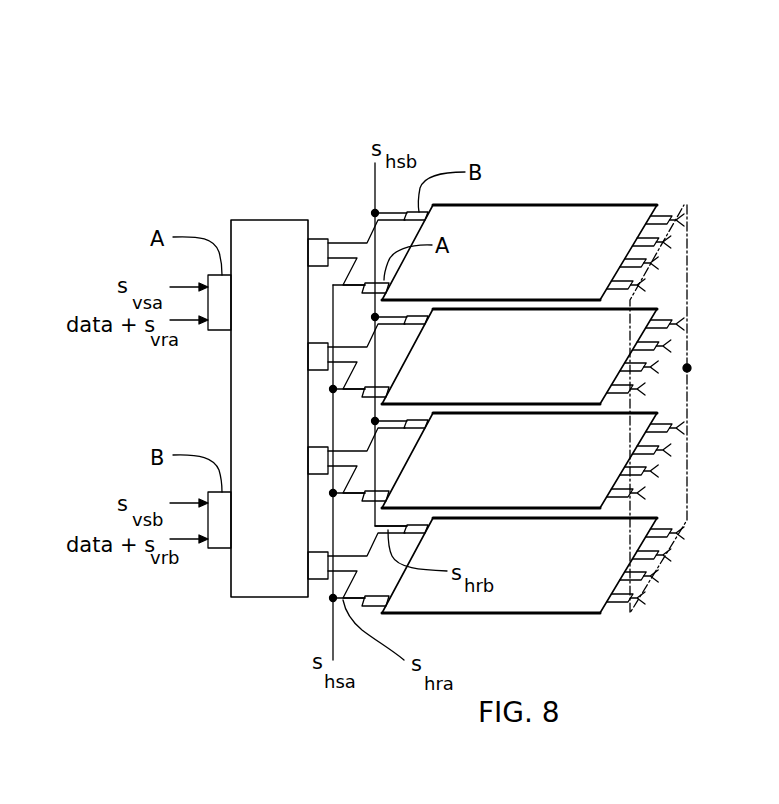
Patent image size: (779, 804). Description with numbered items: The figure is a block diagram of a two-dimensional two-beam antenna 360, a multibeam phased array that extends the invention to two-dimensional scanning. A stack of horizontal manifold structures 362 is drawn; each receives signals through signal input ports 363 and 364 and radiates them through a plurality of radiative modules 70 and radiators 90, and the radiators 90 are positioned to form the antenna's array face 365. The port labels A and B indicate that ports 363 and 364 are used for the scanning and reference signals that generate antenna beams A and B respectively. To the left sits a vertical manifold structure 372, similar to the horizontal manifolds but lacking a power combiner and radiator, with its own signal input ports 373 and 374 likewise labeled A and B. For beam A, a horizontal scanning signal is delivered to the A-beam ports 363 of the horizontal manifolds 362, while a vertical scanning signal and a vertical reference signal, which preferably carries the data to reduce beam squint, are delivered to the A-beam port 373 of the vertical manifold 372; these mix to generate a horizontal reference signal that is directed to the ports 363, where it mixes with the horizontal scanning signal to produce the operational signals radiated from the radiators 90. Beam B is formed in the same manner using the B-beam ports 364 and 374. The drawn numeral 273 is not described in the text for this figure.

The display assembly 360 is at (283, 158).
The controller 372 is at (244, 210).
The input port A 373 is at (222, 330).
The input port B 374 is at (220, 548).
The display panel 362 is at (538, 196).
The connector A of panel 363 is at (362, 604).
The connector B of panel 364 is at (405, 537).
The node 365 is at (691, 365).
The bus line 70 is at (678, 207).
The connector terminal 90 is at (692, 213).
The module 273 is at (778, 65).